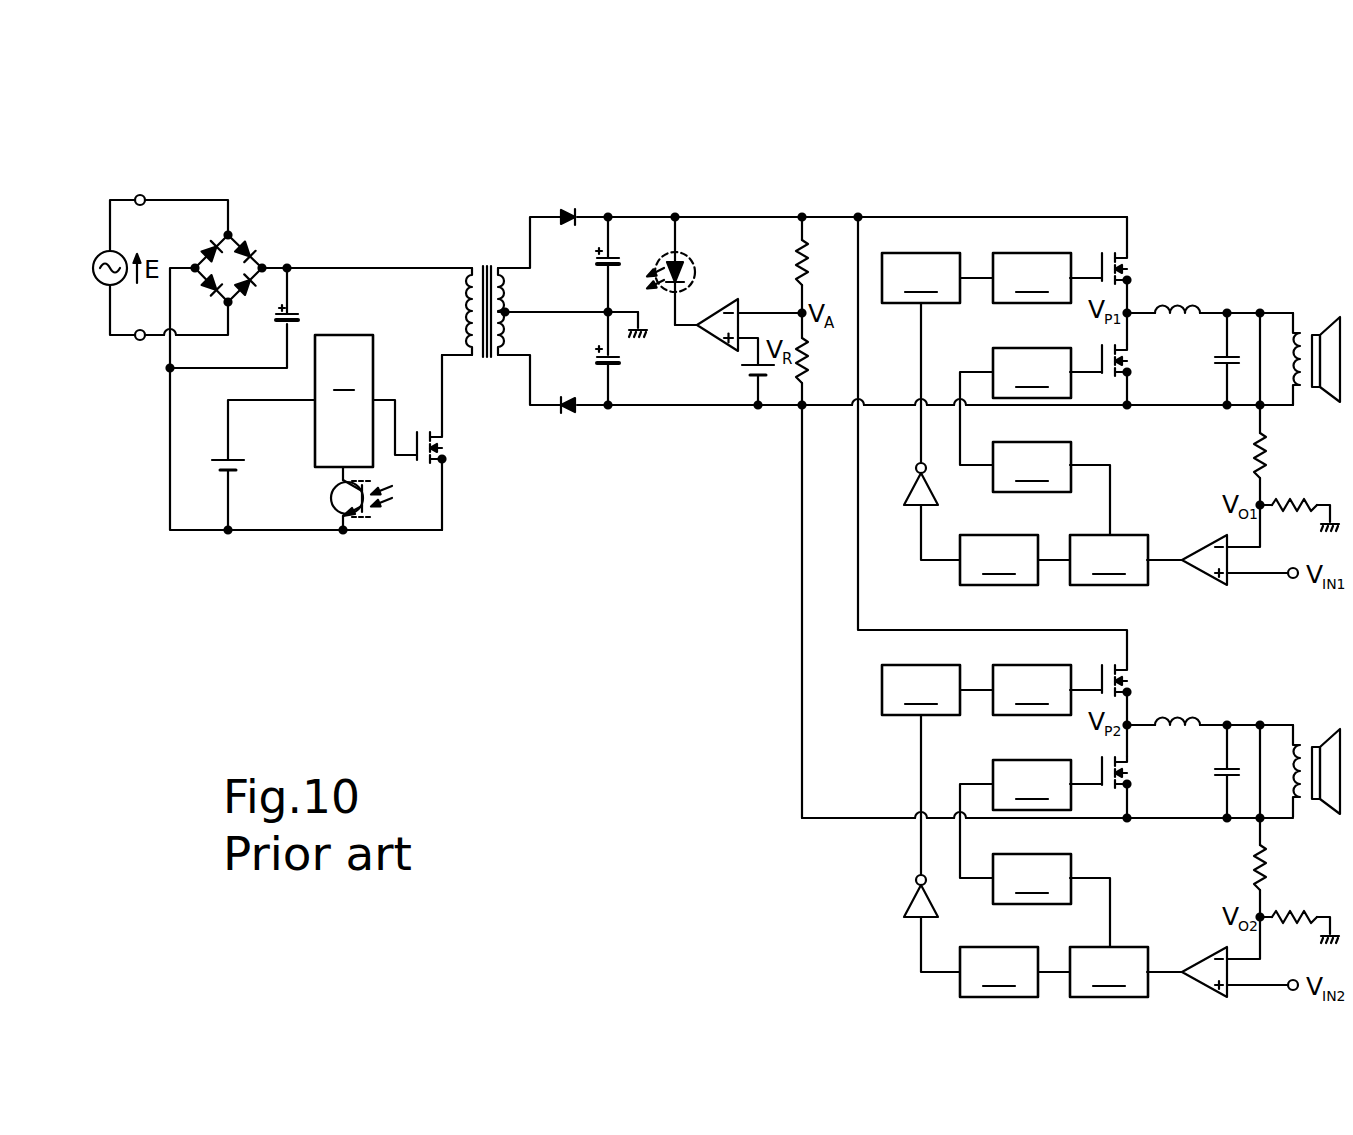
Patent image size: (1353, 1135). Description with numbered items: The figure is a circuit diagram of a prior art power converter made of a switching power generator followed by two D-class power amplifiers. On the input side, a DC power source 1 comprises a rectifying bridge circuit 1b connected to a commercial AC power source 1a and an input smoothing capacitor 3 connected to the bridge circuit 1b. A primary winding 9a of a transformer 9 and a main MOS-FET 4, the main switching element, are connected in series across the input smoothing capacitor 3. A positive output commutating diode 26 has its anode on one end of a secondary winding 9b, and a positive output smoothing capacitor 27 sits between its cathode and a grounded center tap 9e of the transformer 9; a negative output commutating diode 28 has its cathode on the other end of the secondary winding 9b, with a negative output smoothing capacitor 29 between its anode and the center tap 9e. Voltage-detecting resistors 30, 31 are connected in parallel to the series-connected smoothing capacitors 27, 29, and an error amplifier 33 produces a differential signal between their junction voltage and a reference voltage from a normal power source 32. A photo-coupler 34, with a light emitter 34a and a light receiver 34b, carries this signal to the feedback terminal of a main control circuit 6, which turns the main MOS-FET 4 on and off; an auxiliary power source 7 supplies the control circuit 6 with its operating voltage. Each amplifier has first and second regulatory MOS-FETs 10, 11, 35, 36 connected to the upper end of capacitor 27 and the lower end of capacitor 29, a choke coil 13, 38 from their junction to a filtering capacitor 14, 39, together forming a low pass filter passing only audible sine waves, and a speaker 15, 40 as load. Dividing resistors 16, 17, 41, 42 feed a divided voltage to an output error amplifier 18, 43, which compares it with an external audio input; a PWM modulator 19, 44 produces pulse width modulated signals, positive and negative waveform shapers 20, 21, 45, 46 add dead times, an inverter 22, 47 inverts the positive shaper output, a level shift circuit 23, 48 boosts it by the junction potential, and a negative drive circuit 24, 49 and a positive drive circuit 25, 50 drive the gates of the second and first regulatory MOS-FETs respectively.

The DC power source 1 is at (181, 251).
The commercial AC power source 1a is at (100, 251).
The rectifying bridge circuit 1b is at (196, 249).
The input smoothing capacitor 3 is at (306, 318).
The main MOS-FET 4 is at (424, 428).
The main control circuit 6 is at (344, 401).
The auxiliary power source 7 is at (215, 474).
The transformer 9 is at (485, 283).
The primary winding 9a is at (464, 306).
The secondary winding 9b is at (507, 290).
The center tap 9e is at (507, 316).
The first regulatory MOS-FET 10 is at (1129, 256).
The second regulatory MOS-FET 11 is at (1101, 354).
The choke coil 13 is at (1178, 305).
The filtering capacitor 14 is at (1212, 358).
The speaker 15 is at (1320, 324).
The dividing resistor 16 is at (1249, 455).
The dividing resistor 17 is at (1296, 509).
The output error amplifier 18 is at (1208, 539).
The PWM modulator 19 is at (1109, 560).
The negative waveform shaper 20 is at (1032, 467).
The positive waveform shaper 21 is at (999, 560).
The inverter 22 is at (911, 469).
The level shift circuit 23 is at (921, 278).
The negative drive circuit 24 is at (1032, 373).
The positive drive circuit 25 is at (1032, 278).
The positive output commutating diode 26 is at (570, 226).
The positive output smoothing capacitor 27 is at (618, 258).
The negative output commutating diode 28 is at (570, 398).
The negative output smoothing capacitor 29 is at (618, 365).
The voltage-detecting resistor 30 is at (809, 268).
The voltage-detecting resistor 31 is at (808, 362).
The normal power source 32 is at (749, 372).
The error amplifier 33 is at (714, 306).
The photo-coupler 34 is at (696, 290).
The light emitter 34a is at (692, 262).
The light receiver 34b is at (330, 498).
The first regulatory MOS-FET 35 is at (1129, 668).
The second regulatory MOS-FET 36 is at (1101, 766).
The choke coil 38 is at (1178, 717).
The filtering capacitor 39 is at (1212, 770).
The speaker 40 is at (1320, 736).
The dividing resistor 41 is at (1249, 867).
The dividing resistor 42 is at (1296, 921).
The output error amplifier 43 is at (1208, 951).
The PWM modulator 44 is at (1109, 972).
The negative waveform shaper 45 is at (1032, 879).
The positive waveform shaper 46 is at (999, 972).
The inverter 47 is at (911, 881).
The level shift circuit 48 is at (921, 690).
The negative drive circuit 49 is at (1032, 785).
The positive drive circuit 50 is at (1032, 690).